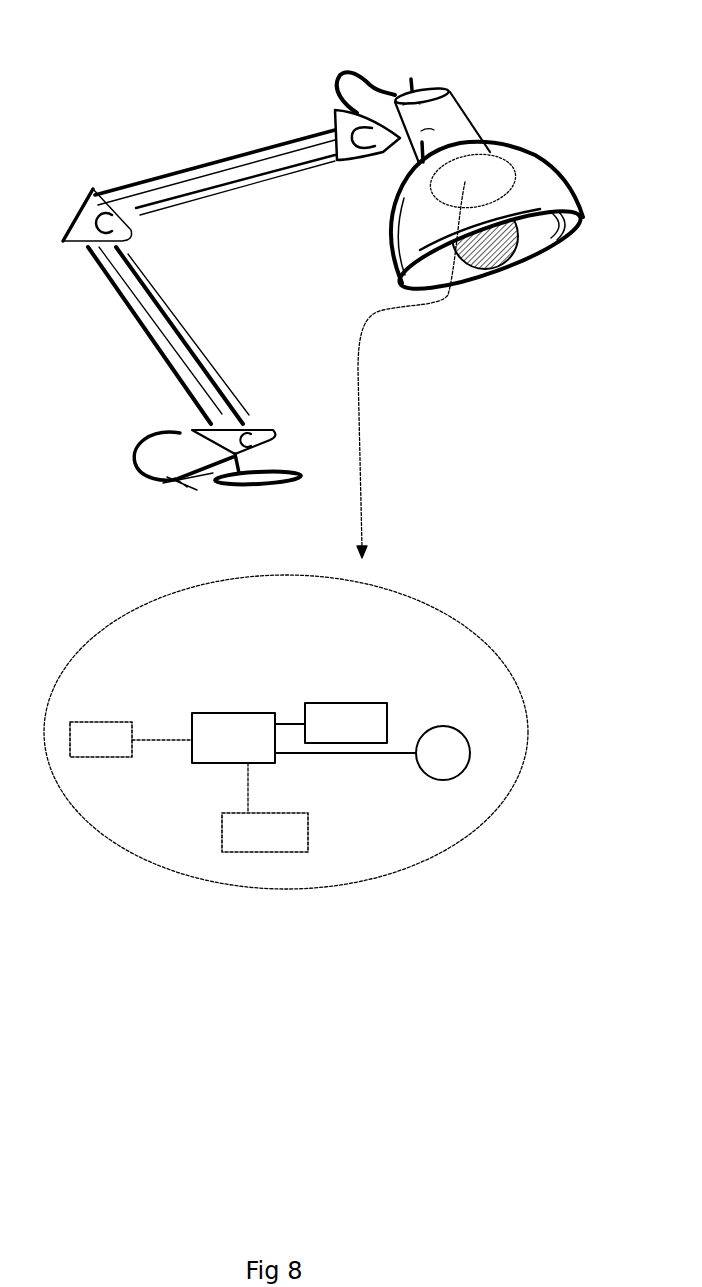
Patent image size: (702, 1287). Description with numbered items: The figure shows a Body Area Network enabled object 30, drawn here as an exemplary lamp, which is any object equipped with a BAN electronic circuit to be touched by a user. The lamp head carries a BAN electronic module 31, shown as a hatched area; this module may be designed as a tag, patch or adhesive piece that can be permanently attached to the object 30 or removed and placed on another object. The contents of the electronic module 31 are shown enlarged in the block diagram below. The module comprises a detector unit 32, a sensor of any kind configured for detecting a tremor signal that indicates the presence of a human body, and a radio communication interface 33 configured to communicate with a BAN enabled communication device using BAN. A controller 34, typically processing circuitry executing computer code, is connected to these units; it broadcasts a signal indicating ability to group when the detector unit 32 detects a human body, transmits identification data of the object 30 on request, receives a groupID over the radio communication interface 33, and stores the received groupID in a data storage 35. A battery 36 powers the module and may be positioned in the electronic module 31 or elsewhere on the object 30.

The BAN enabled object 30 is at (499, 128).
The BAN electronic module 31 is at (492, 178).
The detector unit 32 is at (443, 753).
The radio communication interface 33 is at (346, 723).
The controller 34 is at (304, 763).
The data storage 35 is at (131, 739).
The battery 36 is at (265, 832).